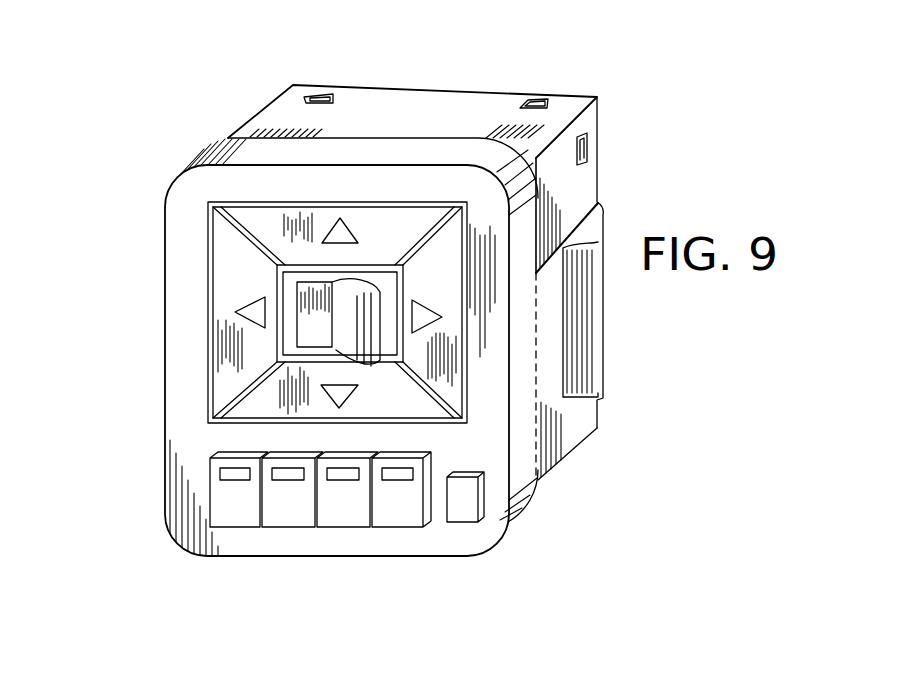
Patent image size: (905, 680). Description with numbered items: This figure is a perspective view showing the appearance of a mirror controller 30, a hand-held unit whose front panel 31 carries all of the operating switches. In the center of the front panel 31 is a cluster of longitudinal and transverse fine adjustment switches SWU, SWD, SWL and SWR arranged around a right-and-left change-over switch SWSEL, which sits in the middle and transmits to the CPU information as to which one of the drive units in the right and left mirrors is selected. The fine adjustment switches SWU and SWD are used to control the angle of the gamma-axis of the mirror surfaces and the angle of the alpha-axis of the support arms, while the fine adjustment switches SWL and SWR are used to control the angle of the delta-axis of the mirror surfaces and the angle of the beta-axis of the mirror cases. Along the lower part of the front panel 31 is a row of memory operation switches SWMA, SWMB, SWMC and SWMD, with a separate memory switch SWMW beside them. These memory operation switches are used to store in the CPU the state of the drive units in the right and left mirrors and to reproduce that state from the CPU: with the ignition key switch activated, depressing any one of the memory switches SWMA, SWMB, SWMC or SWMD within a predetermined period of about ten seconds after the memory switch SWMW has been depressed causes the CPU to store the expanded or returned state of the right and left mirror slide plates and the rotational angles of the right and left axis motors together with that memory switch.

The mirror controller 30 is at (416, 72).
The front panel 31 is at (493, 362).
The longitudinal and transverse fine adjustment switch SWU is at (242, 180).
The longitudinal and transverse fine adjustment switch SWL is at (154, 305).
The longitudinal and transverse fine adjustment switch SWR is at (526, 395).
The longitudinal and transverse fine adjustment switch SWD is at (205, 402).
The right-and-left change-over switch SWSEL is at (206, 322).
The memory operation switch SWMA is at (223, 536).
The memory operation switch SWMB is at (296, 558).
The memory operation switch SWMC is at (354, 536).
The memory operation switch SWMD is at (427, 558).
The memory switch SWMW is at (492, 547).